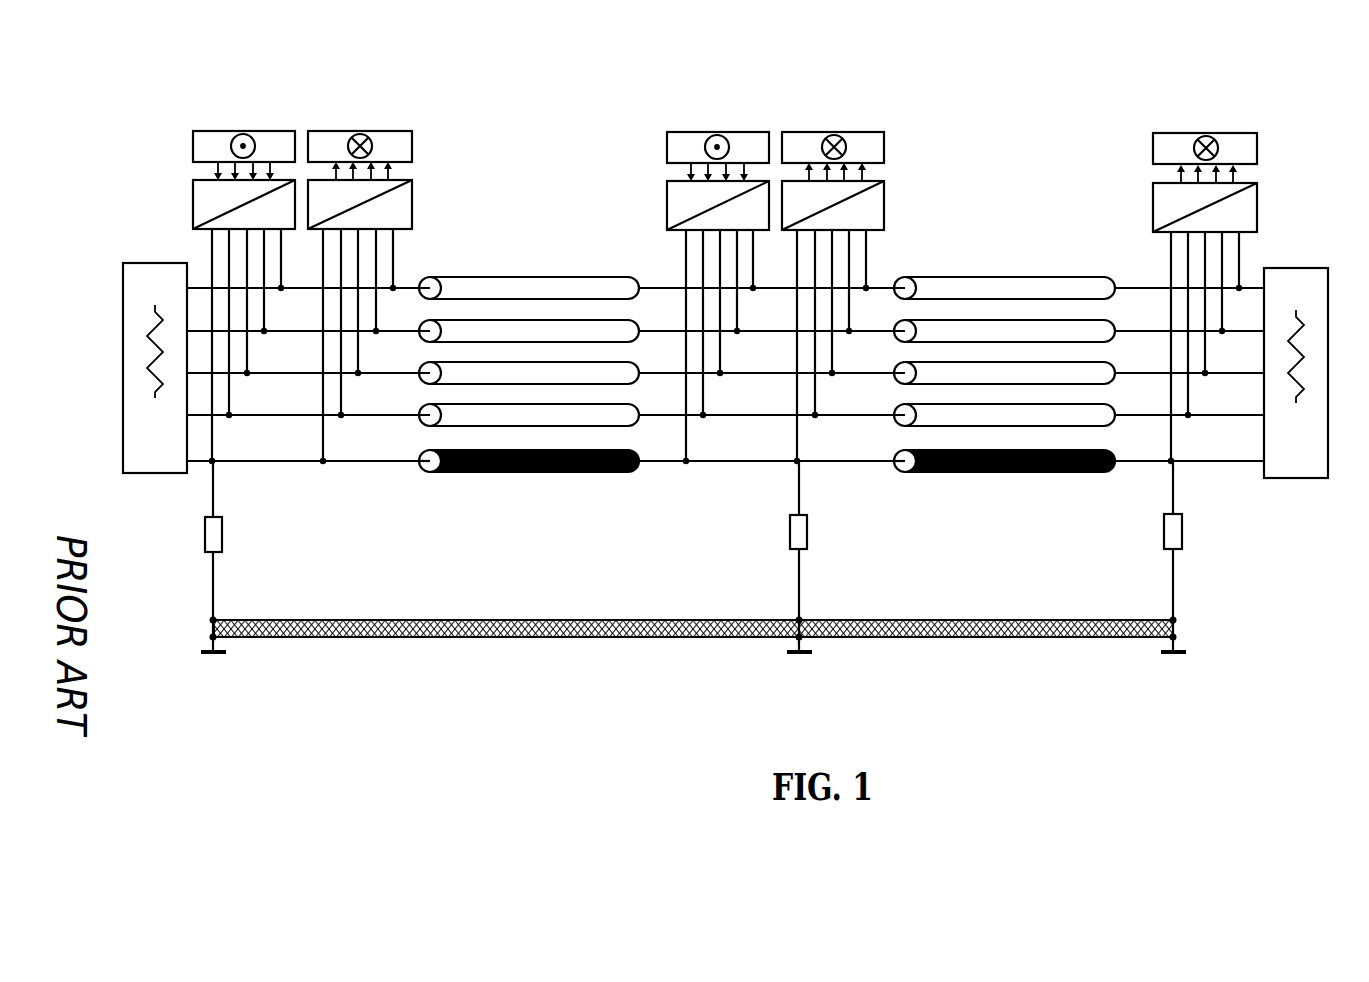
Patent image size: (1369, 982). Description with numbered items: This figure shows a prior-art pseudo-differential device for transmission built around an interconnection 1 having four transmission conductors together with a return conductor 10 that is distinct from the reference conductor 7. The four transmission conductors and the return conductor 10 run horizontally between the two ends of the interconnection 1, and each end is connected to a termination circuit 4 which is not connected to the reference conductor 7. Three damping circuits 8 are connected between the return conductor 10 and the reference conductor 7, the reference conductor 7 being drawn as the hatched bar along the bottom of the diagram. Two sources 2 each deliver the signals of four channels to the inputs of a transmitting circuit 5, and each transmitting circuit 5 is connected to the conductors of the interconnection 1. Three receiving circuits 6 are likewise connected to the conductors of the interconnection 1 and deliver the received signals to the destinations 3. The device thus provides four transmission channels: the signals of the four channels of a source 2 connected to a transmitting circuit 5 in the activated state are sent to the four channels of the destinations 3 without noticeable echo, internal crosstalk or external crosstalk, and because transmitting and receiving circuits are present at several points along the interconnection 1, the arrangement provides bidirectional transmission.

The interconnection 1 is at (506, 267).
The source 2 is at (228, 122).
The destination 3 is at (360, 122).
The termination circuit 4 is at (138, 255).
The transmitting circuit 5 is at (190, 208).
The receiving circuit 6 is at (417, 207).
The reference conductor 7 is at (1192, 629).
The damping circuit 8 is at (237, 543).
The return conductor 10 is at (597, 485).